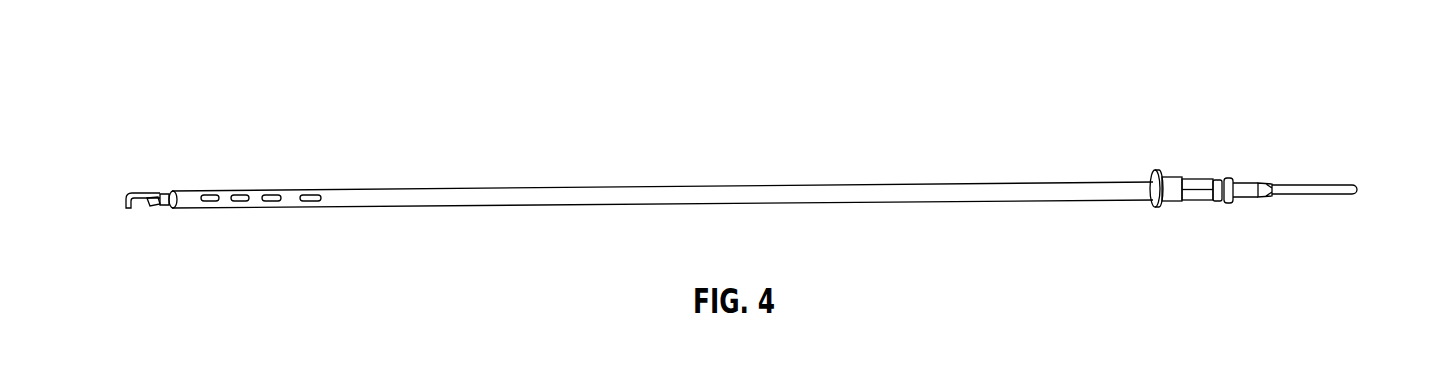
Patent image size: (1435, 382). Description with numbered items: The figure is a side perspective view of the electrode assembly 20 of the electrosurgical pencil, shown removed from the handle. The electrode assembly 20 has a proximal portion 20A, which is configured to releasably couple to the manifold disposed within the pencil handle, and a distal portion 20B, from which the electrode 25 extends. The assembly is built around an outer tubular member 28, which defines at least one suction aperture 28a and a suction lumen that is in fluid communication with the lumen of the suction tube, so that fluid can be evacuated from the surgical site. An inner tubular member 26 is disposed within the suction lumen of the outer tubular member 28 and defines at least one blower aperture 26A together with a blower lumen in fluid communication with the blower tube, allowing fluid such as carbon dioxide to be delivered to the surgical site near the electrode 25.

The electrode assembly 20 is at (734, 169).
The proximal portion 20A is at (1247, 148).
The distal portion 20B is at (277, 169).
The electrode 25 is at (146, 200).
The inner tubular member 26 is at (1317, 183).
The blower aperture 26A is at (163, 193).
The outer tubular member 28 is at (573, 186).
The suction aperture 28a is at (268, 203).